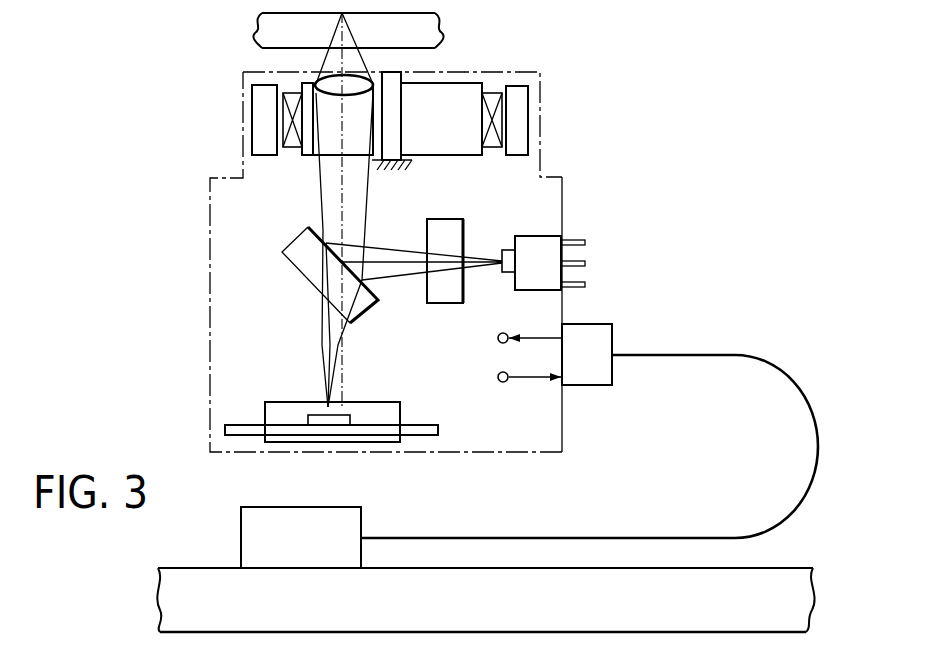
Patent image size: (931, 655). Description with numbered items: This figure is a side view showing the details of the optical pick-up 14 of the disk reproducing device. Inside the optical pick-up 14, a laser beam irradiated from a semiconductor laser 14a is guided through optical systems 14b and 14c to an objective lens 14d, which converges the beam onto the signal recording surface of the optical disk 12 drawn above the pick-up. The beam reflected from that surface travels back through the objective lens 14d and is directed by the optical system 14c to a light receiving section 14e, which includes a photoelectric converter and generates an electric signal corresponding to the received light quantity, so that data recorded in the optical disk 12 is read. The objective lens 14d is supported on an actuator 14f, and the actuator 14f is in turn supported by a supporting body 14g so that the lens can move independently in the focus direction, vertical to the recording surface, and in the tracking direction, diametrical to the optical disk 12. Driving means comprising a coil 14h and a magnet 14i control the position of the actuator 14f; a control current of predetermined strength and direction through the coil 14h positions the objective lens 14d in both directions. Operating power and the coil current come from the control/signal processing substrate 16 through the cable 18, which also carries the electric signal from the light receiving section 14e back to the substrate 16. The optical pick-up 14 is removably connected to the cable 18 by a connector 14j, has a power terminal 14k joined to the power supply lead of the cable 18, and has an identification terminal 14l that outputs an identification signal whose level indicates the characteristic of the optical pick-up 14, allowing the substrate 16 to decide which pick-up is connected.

The optical disk 12 is at (254, 30).
The optical pick-up 14 is at (207, 280).
The semiconductor laser 14a is at (535, 236).
The optical system 14b is at (450, 219).
The optical system 14c is at (367, 310).
The objective lens 14d is at (330, 95).
The light receiving section 14e is at (385, 401).
The actuator 14f is at (443, 82).
The supporting body 14g is at (402, 113).
The coil 14h is at (487, 93).
The magnet 14i is at (522, 86).
The connector 14j is at (607, 323).
The power terminal 14k is at (497, 337).
The identification terminal 14l is at (503, 383).
The control/signal processing substrate 16 is at (790, 568).
The cable 18 is at (818, 437).